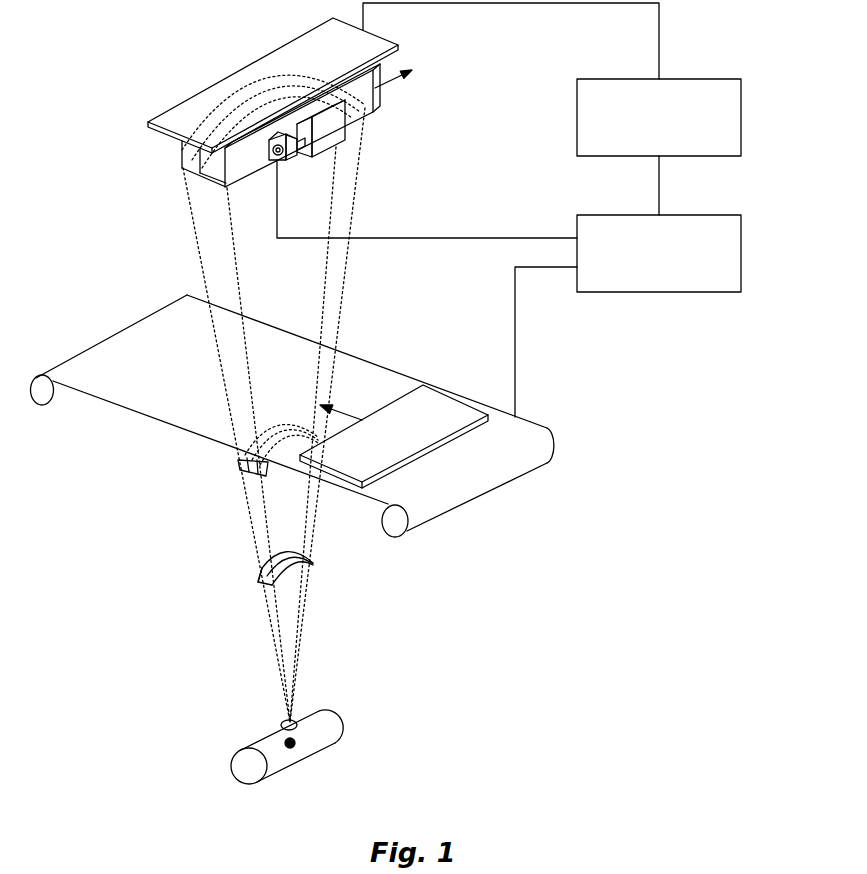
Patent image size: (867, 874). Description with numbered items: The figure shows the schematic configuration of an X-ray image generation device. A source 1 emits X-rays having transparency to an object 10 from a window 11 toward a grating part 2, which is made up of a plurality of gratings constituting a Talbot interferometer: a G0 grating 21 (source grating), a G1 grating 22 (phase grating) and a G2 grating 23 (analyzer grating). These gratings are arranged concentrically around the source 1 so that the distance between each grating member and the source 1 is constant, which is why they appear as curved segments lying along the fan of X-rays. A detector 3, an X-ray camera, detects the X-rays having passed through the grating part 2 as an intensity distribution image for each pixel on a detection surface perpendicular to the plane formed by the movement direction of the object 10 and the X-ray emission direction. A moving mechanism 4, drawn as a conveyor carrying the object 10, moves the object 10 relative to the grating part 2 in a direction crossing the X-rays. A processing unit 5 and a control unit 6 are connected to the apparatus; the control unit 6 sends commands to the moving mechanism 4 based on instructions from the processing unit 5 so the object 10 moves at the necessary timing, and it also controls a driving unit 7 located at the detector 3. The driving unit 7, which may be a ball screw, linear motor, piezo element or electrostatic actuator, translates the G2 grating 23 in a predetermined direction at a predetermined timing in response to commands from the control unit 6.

The source 1 is at (249, 741).
The window 11 is at (283, 723).
The grating part 2 is at (228, 125).
The detector 3 is at (177, 102).
The G2 grating 23 is at (223, 173).
The driving unit 7 is at (320, 143).
The processing unit 5 is at (741, 94).
The control unit 6 is at (741, 231).
The moving mechanism 4 is at (553, 447).
The object 10 is at (403, 397).
The G0 grating 21 is at (295, 565).
The G1 grating 22 is at (268, 474).